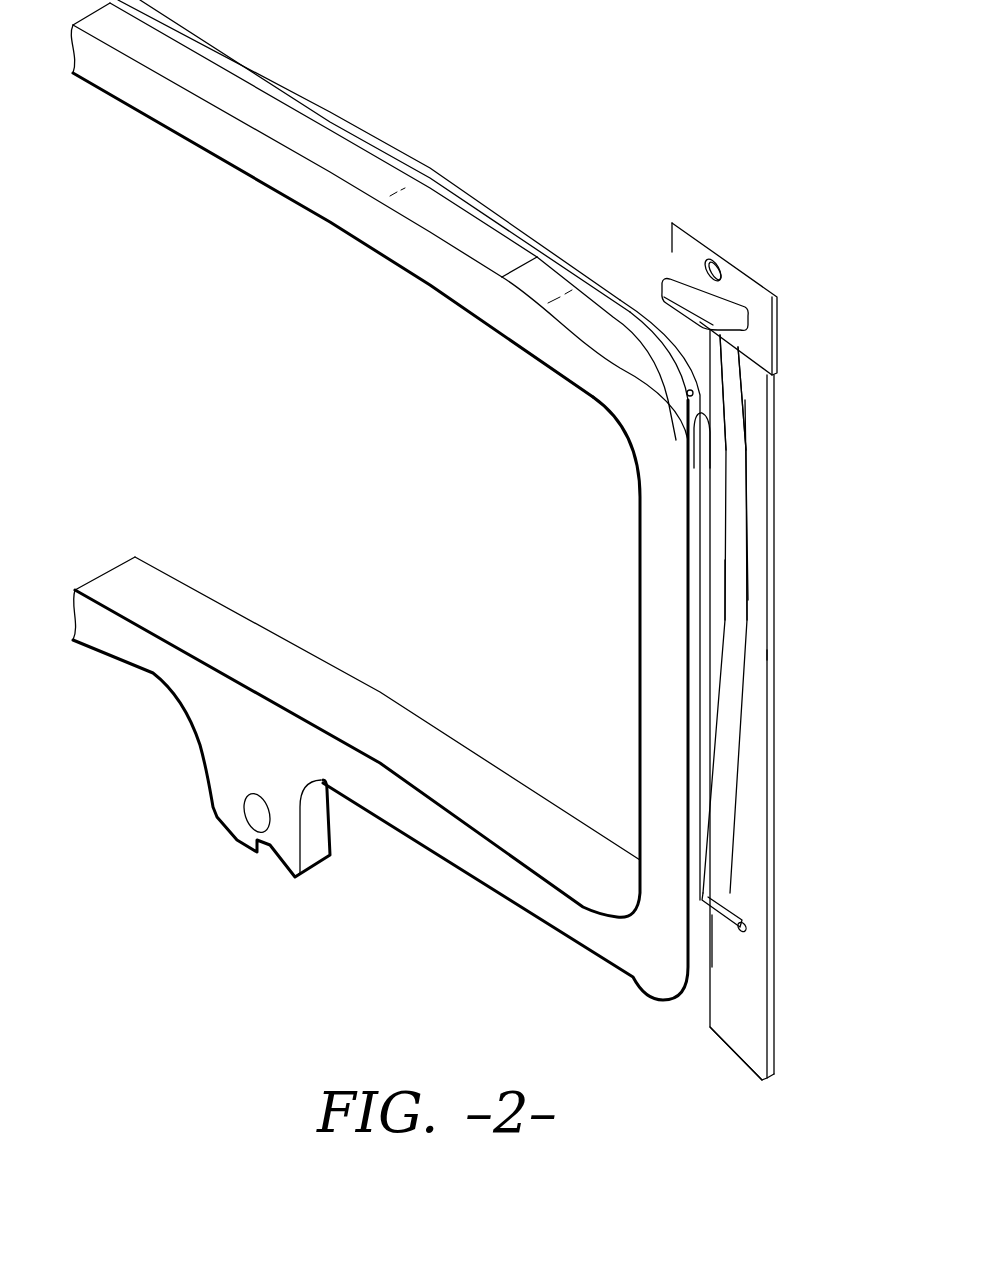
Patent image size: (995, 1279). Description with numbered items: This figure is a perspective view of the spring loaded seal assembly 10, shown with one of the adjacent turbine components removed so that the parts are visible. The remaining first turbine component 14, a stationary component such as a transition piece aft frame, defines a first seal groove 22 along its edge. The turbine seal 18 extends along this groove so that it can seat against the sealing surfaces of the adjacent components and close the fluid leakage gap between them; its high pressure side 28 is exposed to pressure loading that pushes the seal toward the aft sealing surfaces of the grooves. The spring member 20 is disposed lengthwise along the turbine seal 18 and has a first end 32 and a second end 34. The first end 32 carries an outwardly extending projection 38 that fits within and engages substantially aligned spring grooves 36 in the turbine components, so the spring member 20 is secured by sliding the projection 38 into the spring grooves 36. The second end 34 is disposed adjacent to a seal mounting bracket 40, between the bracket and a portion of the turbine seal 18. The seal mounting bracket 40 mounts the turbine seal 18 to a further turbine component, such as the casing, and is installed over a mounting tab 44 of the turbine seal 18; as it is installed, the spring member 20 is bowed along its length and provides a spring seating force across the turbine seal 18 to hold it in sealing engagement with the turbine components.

The spring loaded seal assembly 10 is at (790, 490).
The first turbine component 14 is at (482, 238).
The turbine seal 18 is at (775, 975).
The spring member 20 is at (750, 650).
The first seal groove 22 is at (693, 396).
The high pressure side 28 is at (727, 1030).
The first end 32 is at (720, 870).
The second end 34 is at (733, 368).
The spring grooves 36 is at (707, 585).
The outwardly extending projection 38 is at (746, 930).
The seal mounting bracket 40 is at (747, 272).
The mounting tab 44 is at (660, 283).